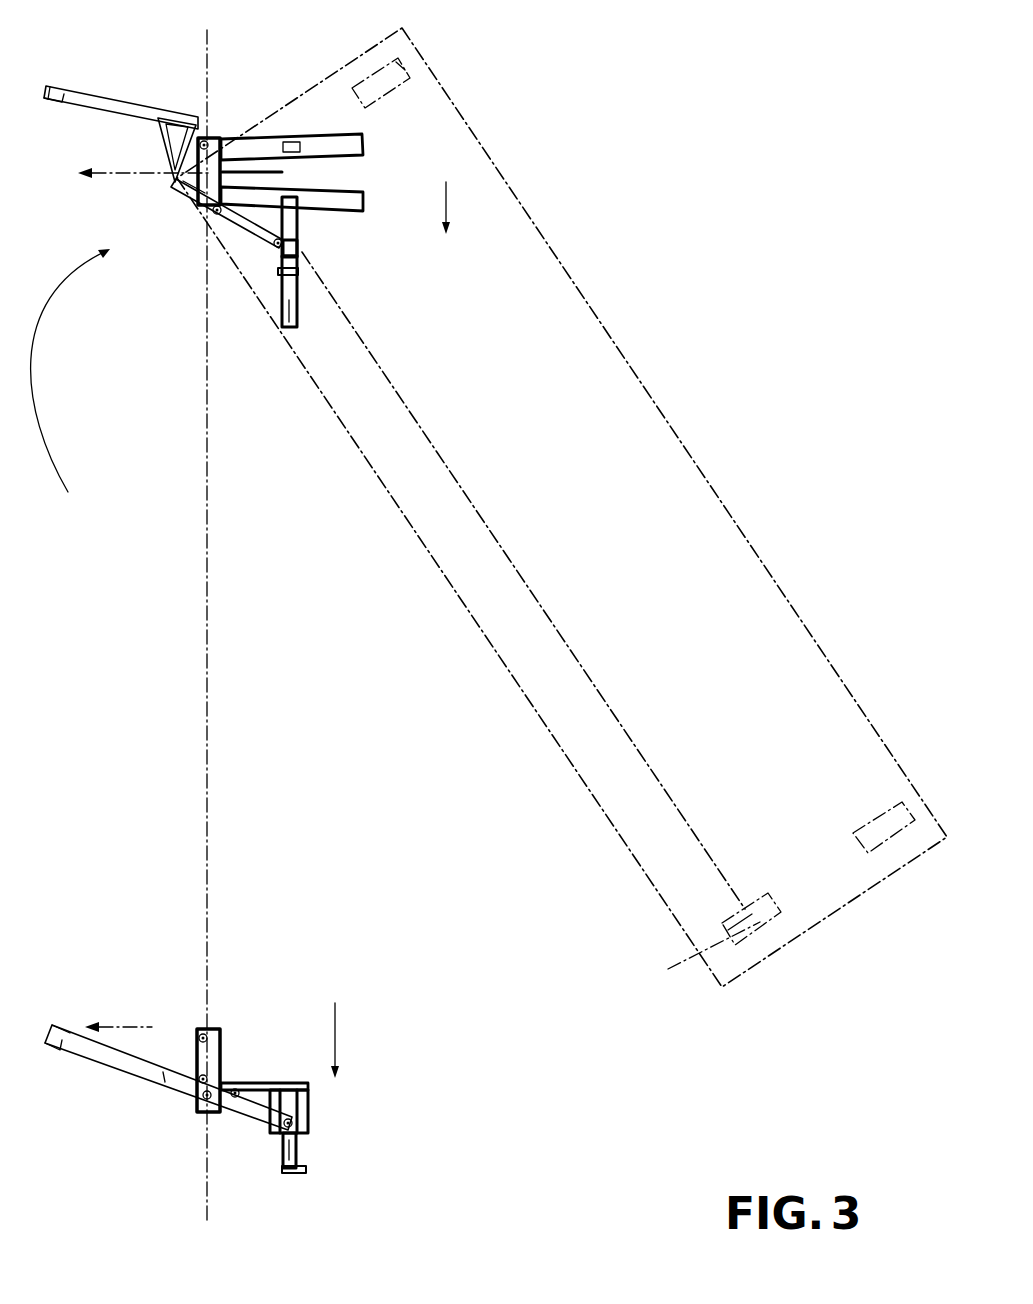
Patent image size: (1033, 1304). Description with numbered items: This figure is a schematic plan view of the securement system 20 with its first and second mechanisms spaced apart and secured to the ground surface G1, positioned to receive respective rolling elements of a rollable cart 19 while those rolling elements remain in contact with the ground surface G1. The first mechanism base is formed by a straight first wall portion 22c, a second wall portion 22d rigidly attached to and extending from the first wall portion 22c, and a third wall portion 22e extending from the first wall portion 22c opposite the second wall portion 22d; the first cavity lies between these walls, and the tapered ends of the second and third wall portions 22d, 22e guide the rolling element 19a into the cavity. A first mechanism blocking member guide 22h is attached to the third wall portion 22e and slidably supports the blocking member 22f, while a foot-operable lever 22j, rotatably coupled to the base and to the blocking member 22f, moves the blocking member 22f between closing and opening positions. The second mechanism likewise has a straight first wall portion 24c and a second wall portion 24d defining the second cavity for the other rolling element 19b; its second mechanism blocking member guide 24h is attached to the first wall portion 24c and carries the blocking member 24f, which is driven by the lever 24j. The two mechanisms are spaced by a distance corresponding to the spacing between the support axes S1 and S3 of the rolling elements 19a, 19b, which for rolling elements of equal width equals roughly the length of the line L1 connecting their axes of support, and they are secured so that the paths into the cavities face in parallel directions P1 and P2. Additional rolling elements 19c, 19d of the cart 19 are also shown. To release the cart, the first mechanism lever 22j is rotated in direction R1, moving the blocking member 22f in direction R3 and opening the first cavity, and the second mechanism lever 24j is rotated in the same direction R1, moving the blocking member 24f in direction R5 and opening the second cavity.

The rollable cart 19 is at (247, 118).
The rolling element 19a is at (290, 165).
The rolling element 19b is at (757, 892).
The rolling element 19c is at (421, 50).
The rolling element 19d is at (863, 830).
The securement system 20 is at (163, 332).
The first wall portion 22c is at (173, 181).
The second wall portion 22d is at (355, 143).
The third wall portion 22e is at (340, 203).
The blocking member 22f is at (289, 320).
The first mechanism blocking member guide 22h is at (276, 245).
The lever 22j is at (85, 93).
The first wall portion 24c is at (199, 1058).
The second wall portion 24d is at (247, 1083).
The blocking member 24f is at (292, 1155).
The second mechanism blocking member guide 24h is at (303, 1112).
The lever 24j is at (128, 1068).
The ground surface G1 is at (573, 187).
The line L1 is at (442, 450).
The direction P1 is at (113, 166).
The direction P2 is at (123, 1013).
The direction R1 is at (70, 370).
The direction R3 is at (462, 208).
The direction R5 is at (350, 1040).
The support axis S1 is at (240, 172).
The support axis S3 is at (766, 935).